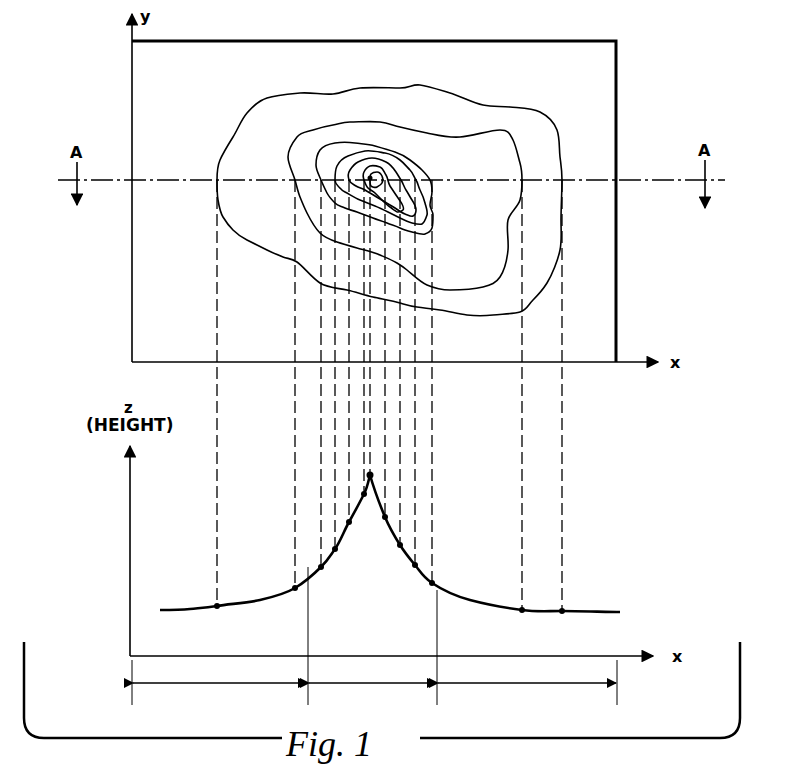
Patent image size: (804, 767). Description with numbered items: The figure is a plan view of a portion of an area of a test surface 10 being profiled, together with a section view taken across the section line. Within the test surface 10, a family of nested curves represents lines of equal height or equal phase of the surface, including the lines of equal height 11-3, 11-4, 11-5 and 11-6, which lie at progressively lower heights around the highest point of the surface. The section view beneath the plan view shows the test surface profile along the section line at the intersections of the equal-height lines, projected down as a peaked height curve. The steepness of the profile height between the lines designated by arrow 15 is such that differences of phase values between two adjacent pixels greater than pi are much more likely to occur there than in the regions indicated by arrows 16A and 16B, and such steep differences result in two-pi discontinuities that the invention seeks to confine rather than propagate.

The portion of an area of a test surface 10 is at (600, 28).
The line of equal height 11-3 is at (430, 168).
The line of equal height 11-4 is at (432, 189).
The line of equal height 11-5 is at (418, 212).
The line of equal height 11-6 is at (368, 178).
The arrow indicating steep region 15 is at (358, 692).
The arrow indicating less steep region 16A is at (194, 692).
The arrow indicating less steep region 16B is at (498, 692).